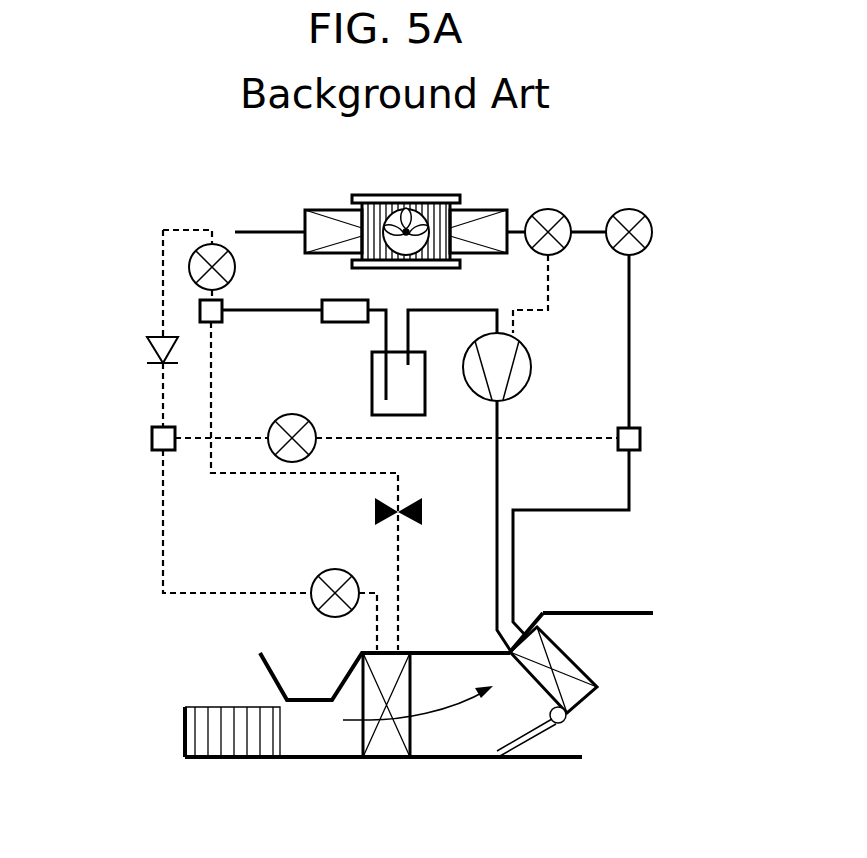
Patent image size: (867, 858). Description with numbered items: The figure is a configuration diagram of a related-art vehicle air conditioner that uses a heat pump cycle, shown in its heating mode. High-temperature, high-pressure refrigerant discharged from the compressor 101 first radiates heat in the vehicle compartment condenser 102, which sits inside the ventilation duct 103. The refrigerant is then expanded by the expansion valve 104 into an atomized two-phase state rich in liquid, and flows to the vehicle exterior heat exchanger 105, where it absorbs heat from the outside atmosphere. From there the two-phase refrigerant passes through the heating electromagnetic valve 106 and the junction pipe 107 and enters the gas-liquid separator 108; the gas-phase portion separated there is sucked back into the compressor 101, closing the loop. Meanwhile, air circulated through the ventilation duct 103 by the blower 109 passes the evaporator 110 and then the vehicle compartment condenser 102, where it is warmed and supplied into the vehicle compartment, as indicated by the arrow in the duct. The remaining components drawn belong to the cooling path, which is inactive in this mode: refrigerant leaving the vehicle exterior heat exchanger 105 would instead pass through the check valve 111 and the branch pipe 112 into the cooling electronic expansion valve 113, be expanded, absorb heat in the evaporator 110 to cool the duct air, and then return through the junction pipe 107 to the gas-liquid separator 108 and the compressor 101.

The compressor 101 is at (528, 350).
The vehicle compartment condenser 102 is at (590, 700).
The ventilation duct 103 is at (457, 761).
The expansion valve 104 is at (630, 210).
The vehicle exterior heat exchanger 105 is at (487, 210).
The heating electromagnetic valve 106 is at (190, 260).
The junction pipe 107 is at (200, 310).
The gas-liquid separator 108 is at (372, 370).
The blower 109 is at (238, 745).
The evaporator 110 is at (385, 740).
The check valve 111 is at (148, 348).
The branch pipe 112 is at (152, 438).
The cooling electronic expansion valve 113 is at (322, 575).